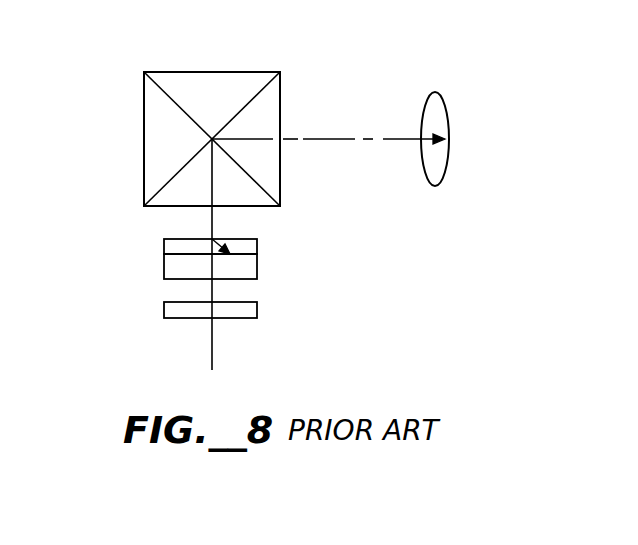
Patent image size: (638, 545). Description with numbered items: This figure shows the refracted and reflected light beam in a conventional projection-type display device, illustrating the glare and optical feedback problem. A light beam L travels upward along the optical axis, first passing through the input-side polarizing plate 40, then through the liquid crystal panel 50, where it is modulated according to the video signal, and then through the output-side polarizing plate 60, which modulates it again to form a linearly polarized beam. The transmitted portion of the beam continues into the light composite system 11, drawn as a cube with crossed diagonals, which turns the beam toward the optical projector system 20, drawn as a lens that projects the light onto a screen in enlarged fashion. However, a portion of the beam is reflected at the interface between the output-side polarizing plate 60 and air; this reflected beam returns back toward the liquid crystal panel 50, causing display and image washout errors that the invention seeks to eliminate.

The light composite system 11 is at (157, 153).
The optical projector system 20 is at (447, 103).
The input-side polarizing plate 40 is at (257, 310).
The liquid crystal panel 50 is at (257, 267).
The output-side polarizing plate 60 is at (257, 247).